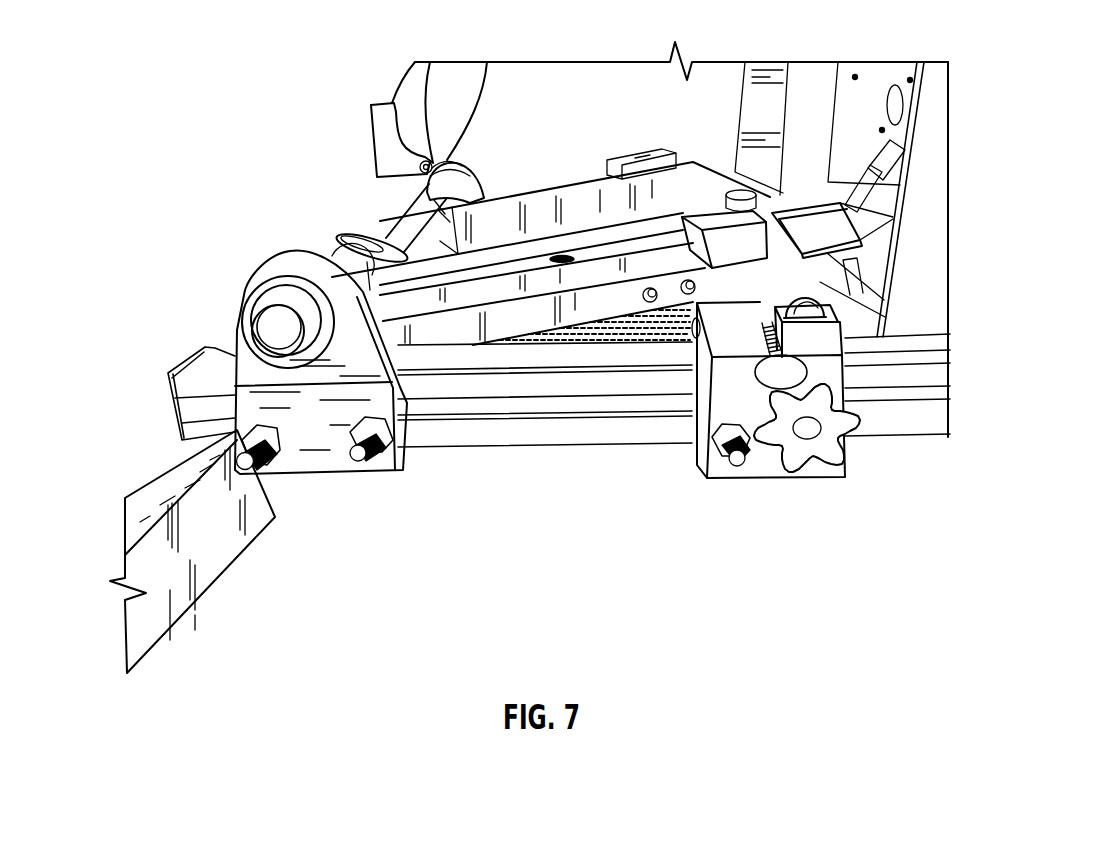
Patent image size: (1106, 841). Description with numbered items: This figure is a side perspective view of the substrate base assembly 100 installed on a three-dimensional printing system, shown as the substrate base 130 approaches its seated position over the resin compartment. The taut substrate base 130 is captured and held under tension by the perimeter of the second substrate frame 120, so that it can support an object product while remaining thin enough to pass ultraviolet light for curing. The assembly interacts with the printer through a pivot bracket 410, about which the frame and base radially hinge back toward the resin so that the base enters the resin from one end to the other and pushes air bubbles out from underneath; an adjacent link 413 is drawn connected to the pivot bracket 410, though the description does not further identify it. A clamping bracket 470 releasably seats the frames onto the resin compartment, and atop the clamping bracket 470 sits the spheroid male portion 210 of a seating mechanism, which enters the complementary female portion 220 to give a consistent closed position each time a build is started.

The substrate base assembly 100 is at (657, 126).
The substrate base 130 is at (512, 258).
The pivot bracket 410 is at (340, 240).
The link rod 413 is at (428, 190).
The second substrate frame 120 is at (752, 282).
The clamping bracket 470 is at (792, 202).
The female portion 220 is at (869, 259).
The male portion 210 is at (822, 315).